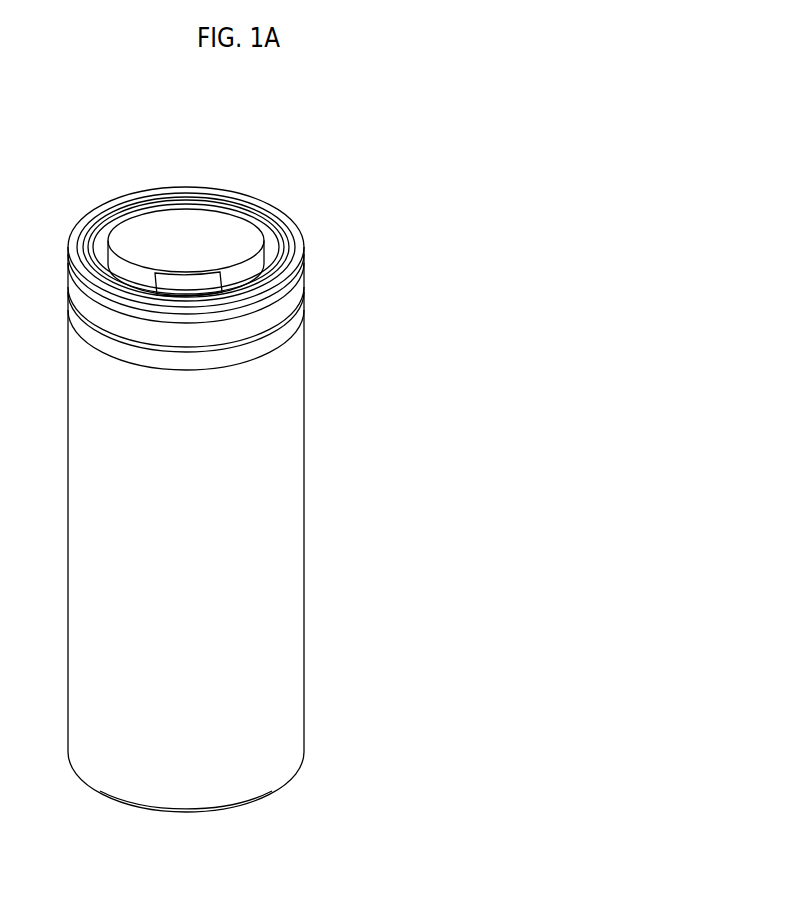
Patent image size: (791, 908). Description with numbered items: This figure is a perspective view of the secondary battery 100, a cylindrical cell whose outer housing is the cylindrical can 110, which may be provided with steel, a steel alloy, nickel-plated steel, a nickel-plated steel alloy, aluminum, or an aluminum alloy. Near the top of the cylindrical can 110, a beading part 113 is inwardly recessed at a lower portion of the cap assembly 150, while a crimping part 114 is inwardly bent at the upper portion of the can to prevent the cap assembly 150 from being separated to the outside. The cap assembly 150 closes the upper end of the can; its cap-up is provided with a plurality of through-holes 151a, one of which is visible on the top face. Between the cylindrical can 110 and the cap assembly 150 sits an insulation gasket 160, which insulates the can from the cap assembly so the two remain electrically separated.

The secondary battery 100 is at (358, 140).
The cylindrical can 110 is at (308, 522).
The beading part 113 is at (305, 296).
The crimping part 114 is at (288, 230).
The cap assembly 150 is at (190, 233).
The through-holes 151a is at (177, 285).
The insulation gasket 160 is at (252, 205).